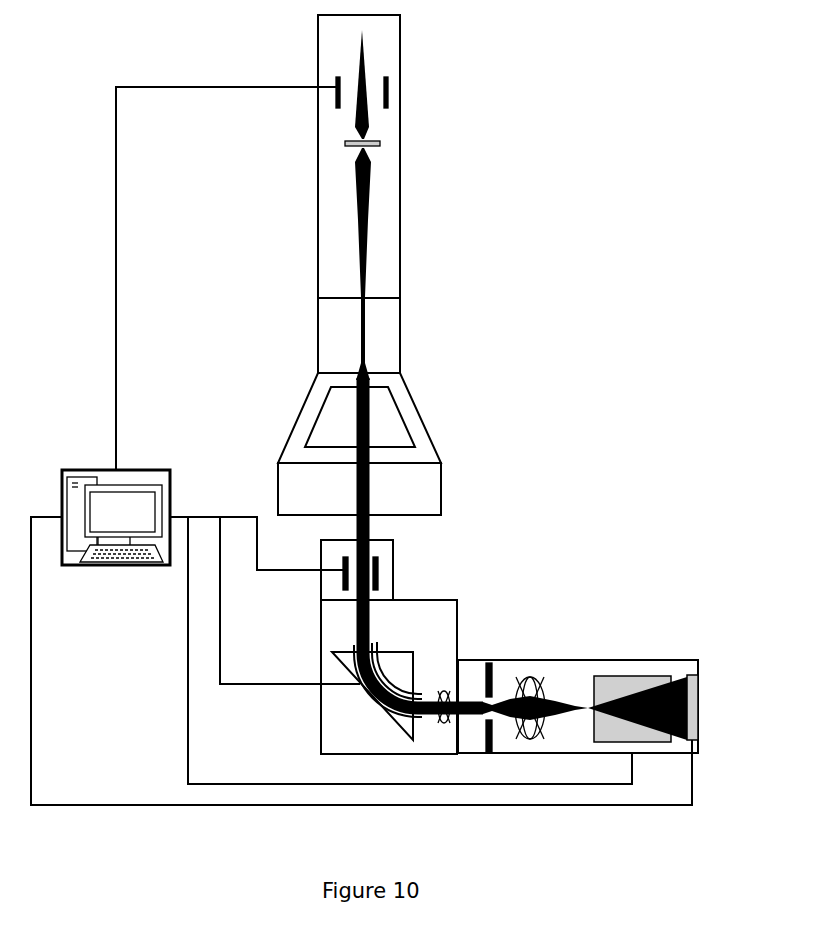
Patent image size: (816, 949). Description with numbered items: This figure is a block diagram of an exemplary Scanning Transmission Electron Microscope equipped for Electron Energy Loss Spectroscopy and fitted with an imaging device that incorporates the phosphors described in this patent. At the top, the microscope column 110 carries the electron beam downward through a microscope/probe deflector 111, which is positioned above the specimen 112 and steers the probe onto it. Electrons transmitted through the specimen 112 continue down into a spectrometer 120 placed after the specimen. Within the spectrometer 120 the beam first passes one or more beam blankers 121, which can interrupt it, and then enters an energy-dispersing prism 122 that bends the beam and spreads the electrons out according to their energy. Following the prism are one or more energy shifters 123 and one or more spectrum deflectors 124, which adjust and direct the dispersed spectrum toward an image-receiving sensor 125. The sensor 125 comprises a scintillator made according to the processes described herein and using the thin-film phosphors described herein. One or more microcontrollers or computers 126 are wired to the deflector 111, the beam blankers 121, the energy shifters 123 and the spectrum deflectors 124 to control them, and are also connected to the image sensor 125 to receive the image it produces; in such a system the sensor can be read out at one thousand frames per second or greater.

The electron beam column 110 is at (370, 265).
The microscope/probe deflector 111 is at (388, 97).
The specimen 112 is at (380, 146).
The spectrometer 120 is at (457, 600).
The beam blanker 121 is at (423, 558).
The energy-dispersing prism 122 is at (413, 740).
The energy shifter 123 is at (445, 657).
The spectrum deflector 124 is at (623, 676).
The image-receiving sensor 125 is at (699, 685).
The microcontrollers or computers 126 is at (157, 470).